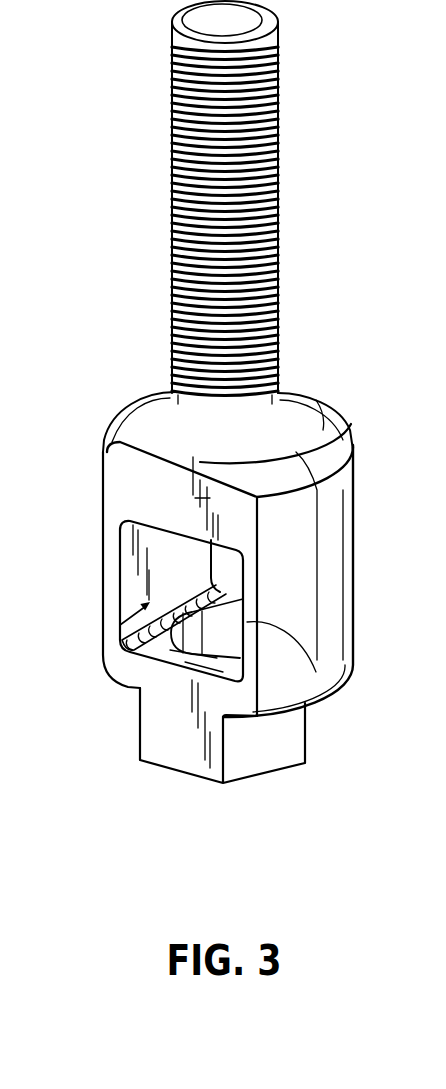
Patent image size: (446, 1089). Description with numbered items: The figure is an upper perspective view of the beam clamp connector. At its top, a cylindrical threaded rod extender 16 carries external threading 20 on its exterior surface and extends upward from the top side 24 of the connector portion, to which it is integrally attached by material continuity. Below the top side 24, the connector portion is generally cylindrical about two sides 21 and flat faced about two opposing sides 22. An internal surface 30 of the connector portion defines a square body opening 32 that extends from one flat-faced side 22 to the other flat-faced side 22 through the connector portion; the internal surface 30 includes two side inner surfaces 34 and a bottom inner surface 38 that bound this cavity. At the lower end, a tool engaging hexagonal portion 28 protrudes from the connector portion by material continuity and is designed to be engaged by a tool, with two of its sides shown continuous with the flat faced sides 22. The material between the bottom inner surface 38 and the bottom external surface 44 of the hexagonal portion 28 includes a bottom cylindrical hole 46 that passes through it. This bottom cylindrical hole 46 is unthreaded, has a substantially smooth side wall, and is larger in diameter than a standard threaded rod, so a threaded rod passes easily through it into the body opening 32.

The threaded rod extender 16 is at (280, 233).
The external threading 20 is at (280, 106).
The top side 24 is at (280, 420).
The cylindrical sides 21 is at (332, 513).
The flat faced sides 22 is at (222, 492).
The internal surface 30 is at (128, 558).
The side inner surfaces 34 is at (128, 583).
The body opening 32 is at (120, 625).
The bottom inner surface 38 is at (128, 652).
The bottom cylindrical hole 46 is at (306, 647).
The hexagonal portion 28 is at (252, 753).
The bottom external surface 44 is at (185, 774).